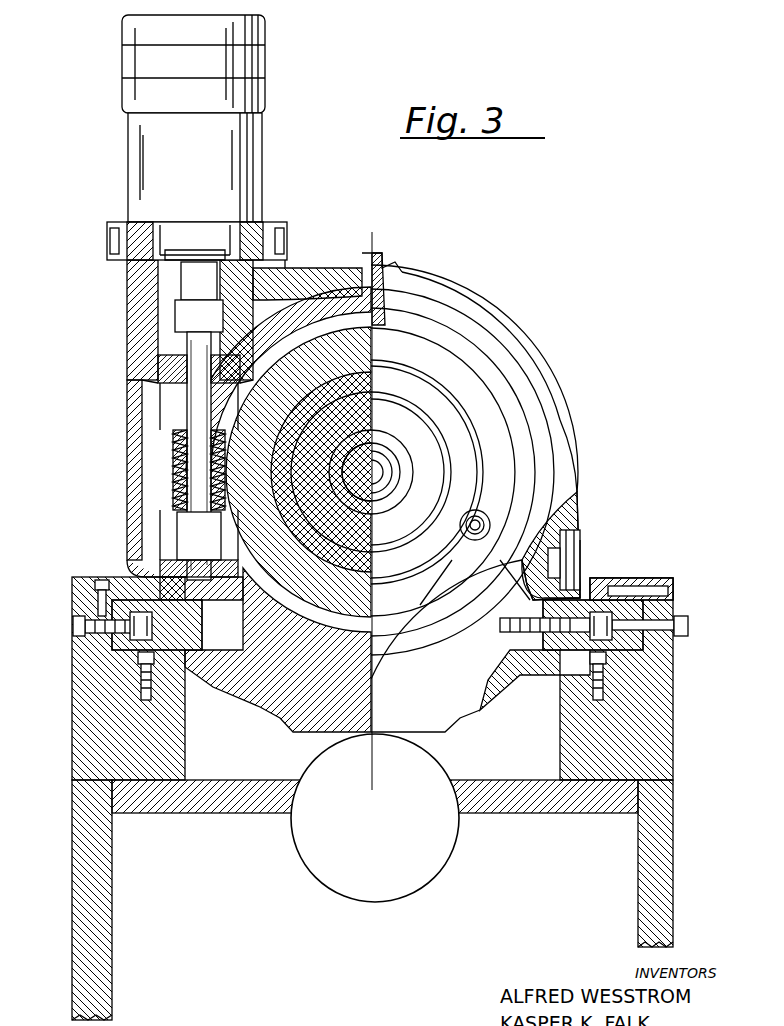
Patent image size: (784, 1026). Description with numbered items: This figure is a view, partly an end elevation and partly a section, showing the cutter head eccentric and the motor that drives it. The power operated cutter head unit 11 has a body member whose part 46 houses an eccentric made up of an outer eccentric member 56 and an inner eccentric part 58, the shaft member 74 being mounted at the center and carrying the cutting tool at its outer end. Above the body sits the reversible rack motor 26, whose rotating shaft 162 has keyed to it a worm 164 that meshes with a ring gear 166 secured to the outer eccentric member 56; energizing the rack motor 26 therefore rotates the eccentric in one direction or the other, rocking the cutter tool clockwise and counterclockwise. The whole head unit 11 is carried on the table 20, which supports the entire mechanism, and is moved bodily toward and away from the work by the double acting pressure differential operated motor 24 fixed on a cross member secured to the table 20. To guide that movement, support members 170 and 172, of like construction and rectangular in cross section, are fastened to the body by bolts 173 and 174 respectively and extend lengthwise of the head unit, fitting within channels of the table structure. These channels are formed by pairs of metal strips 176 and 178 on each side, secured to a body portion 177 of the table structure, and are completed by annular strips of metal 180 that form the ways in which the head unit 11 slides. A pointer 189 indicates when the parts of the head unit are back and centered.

The power operated cutter head unit 11 is at (552, 373).
The table 20 is at (203, 802).
The double acting pressure differential operated motor 24 is at (434, 838).
The rack motor 26 is at (225, 158).
The body member part 46 is at (307, 266).
The outer eccentric member 56 is at (372, 582).
The eccentric part 58 is at (330, 530).
The shaft member 74 is at (376, 444).
The rotating shaft 162 is at (190, 378).
The worm 164 is at (172, 468).
The ring gear 166 is at (385, 300).
The support member 170 is at (145, 612).
The support member 172 is at (582, 592).
The bolt 173 is at (130, 636).
The bolt 174 is at (605, 592).
The strip of metal 176 is at (98, 605).
The body portion of the table structure 177 is at (98, 755).
The strip of metal 178 is at (150, 680).
The annular strip of metal 180 is at (100, 580).
The pointer 189 is at (360, 318).